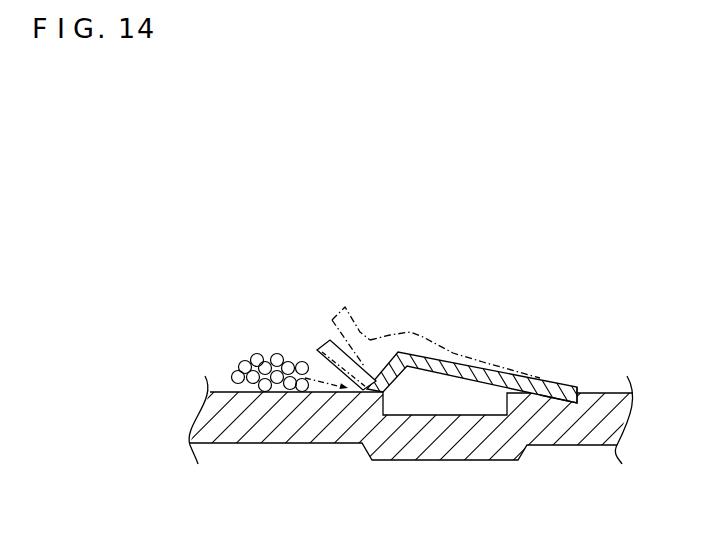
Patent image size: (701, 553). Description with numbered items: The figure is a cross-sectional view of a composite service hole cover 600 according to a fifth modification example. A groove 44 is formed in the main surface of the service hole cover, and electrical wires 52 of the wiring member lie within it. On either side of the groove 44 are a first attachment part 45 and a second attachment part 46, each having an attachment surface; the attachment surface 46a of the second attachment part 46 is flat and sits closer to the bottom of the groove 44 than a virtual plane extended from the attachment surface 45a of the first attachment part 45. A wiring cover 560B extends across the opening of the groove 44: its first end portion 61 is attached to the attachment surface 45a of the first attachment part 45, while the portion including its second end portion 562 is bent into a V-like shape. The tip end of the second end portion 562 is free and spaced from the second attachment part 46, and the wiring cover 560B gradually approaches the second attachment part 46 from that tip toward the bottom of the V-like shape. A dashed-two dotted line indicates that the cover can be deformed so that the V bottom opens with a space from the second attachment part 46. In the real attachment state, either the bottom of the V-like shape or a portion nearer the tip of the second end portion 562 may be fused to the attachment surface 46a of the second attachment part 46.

The composite service hole cover 600 is at (257, 243).
The groove 44 is at (461, 413).
The attachment surface of the second attachment part 46a is at (333, 392).
The second attachment part 46 is at (297, 442).
The attachment surface of the first attachment part 45a is at (528, 383).
The first attachment part 45 is at (477, 361).
The first end portion 61 is at (561, 386).
The electrical wire 52 is at (235, 370).
The second end portion 562 is at (353, 342).
The wiring cover 560B is at (453, 362).